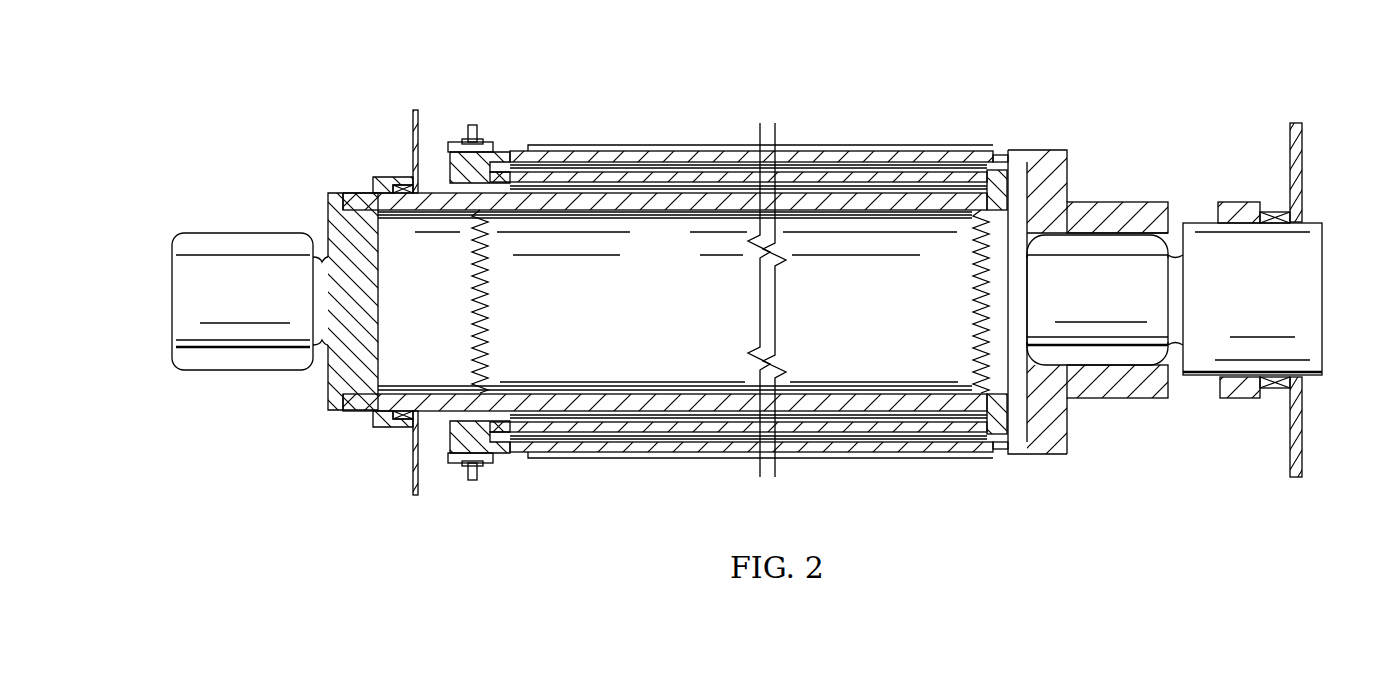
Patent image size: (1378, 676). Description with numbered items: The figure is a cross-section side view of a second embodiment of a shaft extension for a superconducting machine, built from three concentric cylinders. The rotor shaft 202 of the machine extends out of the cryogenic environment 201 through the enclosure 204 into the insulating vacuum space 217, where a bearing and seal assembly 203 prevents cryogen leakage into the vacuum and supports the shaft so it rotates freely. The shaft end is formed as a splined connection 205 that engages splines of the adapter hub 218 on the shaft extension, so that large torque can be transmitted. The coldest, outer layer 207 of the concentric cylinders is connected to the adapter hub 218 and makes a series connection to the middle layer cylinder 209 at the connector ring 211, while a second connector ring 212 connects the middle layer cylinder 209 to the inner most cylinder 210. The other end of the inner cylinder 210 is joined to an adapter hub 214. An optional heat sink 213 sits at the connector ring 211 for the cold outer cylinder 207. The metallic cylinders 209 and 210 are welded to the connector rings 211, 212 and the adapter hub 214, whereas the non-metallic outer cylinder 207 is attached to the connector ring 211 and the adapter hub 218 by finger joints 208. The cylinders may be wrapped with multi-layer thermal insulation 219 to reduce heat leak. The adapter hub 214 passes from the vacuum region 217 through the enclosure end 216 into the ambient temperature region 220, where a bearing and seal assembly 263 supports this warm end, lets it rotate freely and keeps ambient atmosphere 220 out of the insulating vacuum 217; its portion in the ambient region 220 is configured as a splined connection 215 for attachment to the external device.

The cryogenic environment 201 is at (1340, 147).
The rotor shaft 202 is at (1272, 306).
The bearing and seal assembly 203 is at (1276, 205).
The enclosure 204 is at (1290, 440).
The splined connection 205 is at (1110, 366).
The outer layer cylinder 207 is at (851, 156).
The finger joints 208 is at (510, 153).
The middle layer cylinder 209 is at (797, 177).
The inner cylinder 210 is at (655, 205).
The connector ring 211 is at (452, 160).
The connector ring 212 is at (1003, 165).
The heat sink 213 is at (478, 135).
The adapter hub 214 is at (380, 318).
The splined connection 215 is at (228, 372).
The enclosure end 216 is at (413, 462).
The insulating vacuum space 217 is at (585, 97).
The adapter hub 218 is at (1118, 202).
The multi-layer thermal insulation 219 is at (826, 413).
The ambient temperature region 220 is at (240, 148).
The bearing and seal assembly 263 is at (384, 175).